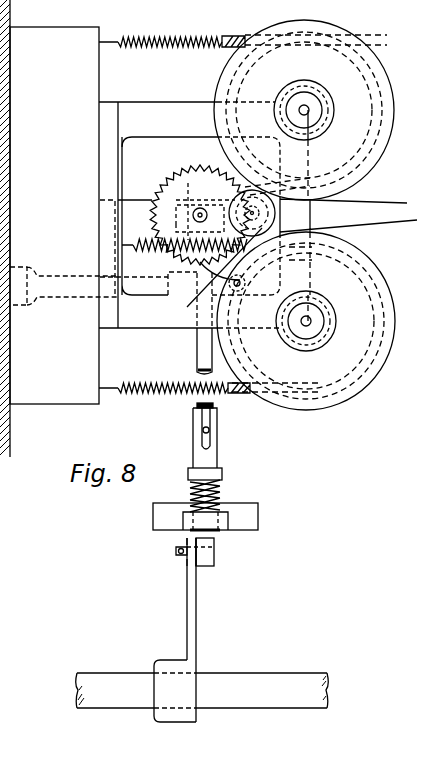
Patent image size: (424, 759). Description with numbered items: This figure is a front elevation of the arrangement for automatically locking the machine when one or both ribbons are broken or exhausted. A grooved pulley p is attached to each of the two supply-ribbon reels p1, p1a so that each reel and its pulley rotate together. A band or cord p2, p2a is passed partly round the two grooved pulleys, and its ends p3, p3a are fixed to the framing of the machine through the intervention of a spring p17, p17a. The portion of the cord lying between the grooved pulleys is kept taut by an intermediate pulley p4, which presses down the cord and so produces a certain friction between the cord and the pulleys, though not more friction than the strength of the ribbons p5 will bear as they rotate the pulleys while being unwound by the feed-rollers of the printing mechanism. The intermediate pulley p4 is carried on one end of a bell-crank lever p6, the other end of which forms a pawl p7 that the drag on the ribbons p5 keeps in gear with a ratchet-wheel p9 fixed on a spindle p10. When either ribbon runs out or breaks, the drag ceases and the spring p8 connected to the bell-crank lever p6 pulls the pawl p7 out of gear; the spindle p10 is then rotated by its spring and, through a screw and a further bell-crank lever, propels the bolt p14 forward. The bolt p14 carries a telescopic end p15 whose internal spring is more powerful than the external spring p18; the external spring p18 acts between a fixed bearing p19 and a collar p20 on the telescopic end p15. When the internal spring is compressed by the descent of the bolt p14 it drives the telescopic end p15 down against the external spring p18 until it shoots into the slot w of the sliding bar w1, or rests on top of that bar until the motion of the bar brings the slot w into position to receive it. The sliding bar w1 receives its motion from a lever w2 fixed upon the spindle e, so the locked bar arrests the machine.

The grooved pulley p is at (250, 75).
The supply-ribbon reel p1 is at (249, 353).
The supply-ribbon reel p1a is at (304, 110).
The band or cord p2 is at (344, 382).
The band or cord p2a is at (358, 153).
The end of the cord p3 is at (237, 393).
The end of the cord p3a is at (226, 41).
The intermediate pulley p4 is at (270, 213).
The ribbon p5 is at (392, 240).
The bell-crank lever p6 is at (245, 255).
The pawl p7 is at (205, 292).
The spring p8 is at (142, 255).
The ratchet-wheel p9 is at (175, 180).
The spindle p10 is at (190, 227).
The bolt p14 is at (196, 404).
The telescopic end p15 is at (217, 452).
The spring p17 is at (128, 398).
The spring p17a is at (137, 52).
The external spring p18 is at (220, 494).
The fixed bearing p19 is at (258, 518).
The collar p20 is at (222, 474).
The slot w is at (214, 546).
The sliding bar w1 is at (212, 565).
The lever w2 is at (196, 610).
The spindle e is at (202, 690).